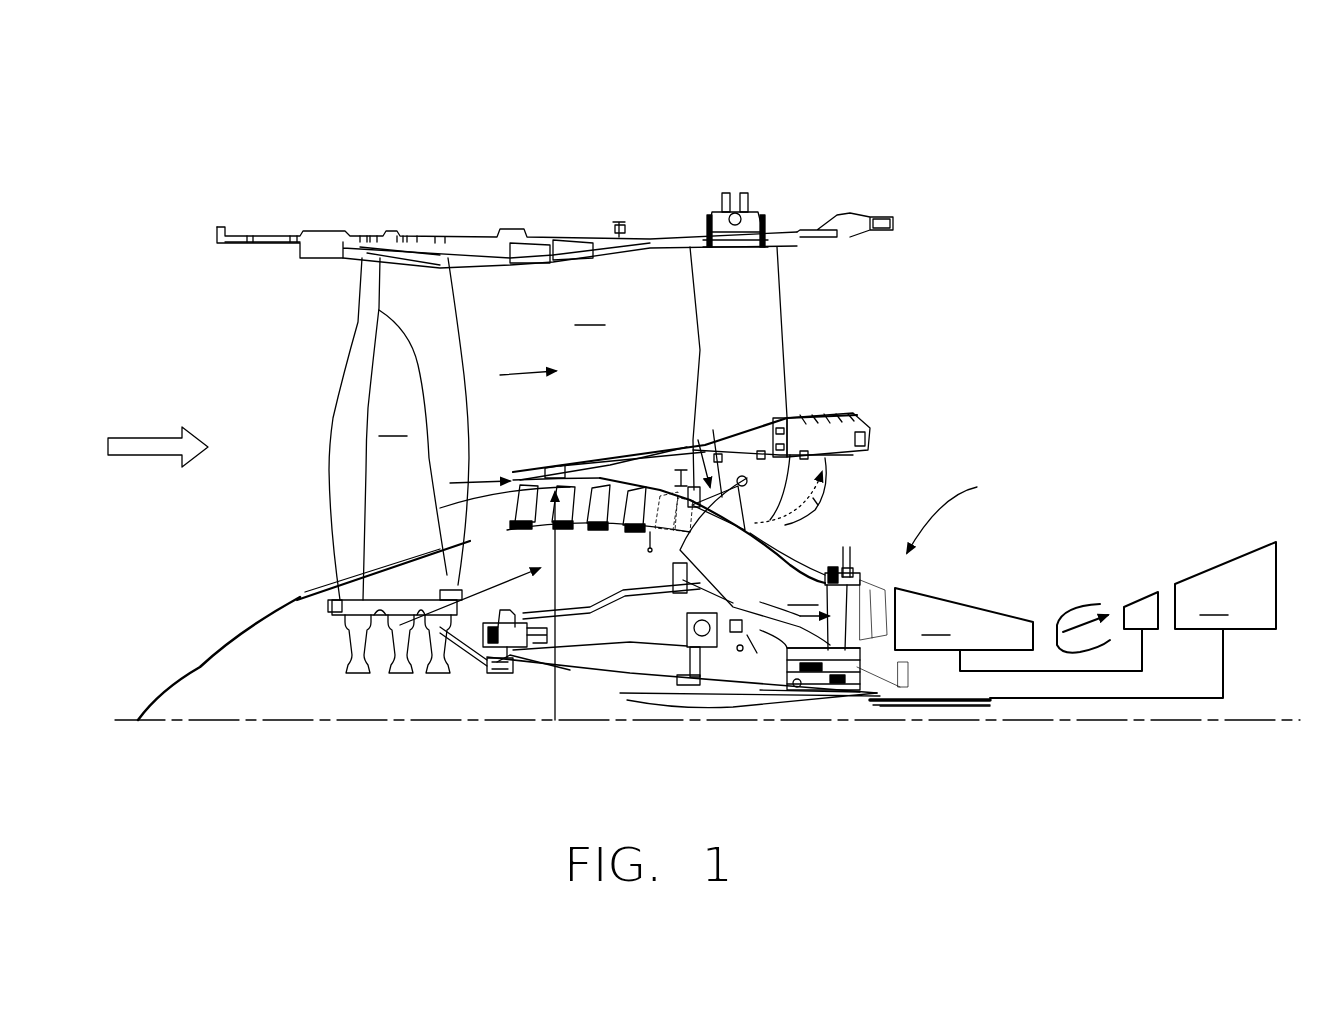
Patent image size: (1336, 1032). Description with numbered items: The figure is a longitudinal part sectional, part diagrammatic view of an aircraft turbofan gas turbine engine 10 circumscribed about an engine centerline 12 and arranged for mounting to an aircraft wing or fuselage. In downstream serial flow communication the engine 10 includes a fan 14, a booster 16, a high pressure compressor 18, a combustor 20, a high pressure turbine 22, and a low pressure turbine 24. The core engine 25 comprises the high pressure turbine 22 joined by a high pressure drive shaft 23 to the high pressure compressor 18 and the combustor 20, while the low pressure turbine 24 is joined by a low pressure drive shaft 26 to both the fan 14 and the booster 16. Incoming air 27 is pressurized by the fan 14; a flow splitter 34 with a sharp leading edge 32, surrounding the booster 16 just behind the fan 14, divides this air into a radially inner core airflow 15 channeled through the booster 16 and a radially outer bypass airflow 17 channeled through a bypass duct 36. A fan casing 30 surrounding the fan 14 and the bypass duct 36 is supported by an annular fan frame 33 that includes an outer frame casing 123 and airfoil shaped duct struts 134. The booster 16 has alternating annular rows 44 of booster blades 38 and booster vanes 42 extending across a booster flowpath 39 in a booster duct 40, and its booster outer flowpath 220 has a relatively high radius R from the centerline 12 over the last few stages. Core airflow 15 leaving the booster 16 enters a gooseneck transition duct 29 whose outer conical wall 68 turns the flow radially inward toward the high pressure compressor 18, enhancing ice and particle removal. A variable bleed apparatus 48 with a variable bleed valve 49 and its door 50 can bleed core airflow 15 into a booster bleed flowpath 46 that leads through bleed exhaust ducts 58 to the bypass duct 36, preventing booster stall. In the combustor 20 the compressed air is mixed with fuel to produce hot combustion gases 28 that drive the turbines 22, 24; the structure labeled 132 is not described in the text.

The aircraft turbofan gas turbine engine 10 is at (1098, 186).
The engine centerline 12 is at (1122, 722).
The fan 14 is at (399, 429).
The core airflow 15 is at (463, 478).
The booster 16 is at (507, 593).
The bypass airflow 17 is at (517, 370).
The high pressure compressor 18 is at (964, 619).
The combustor 20 is at (1069, 614).
The high pressure turbine 22 is at (1131, 606).
The high pressure drive shaft 23 is at (1060, 672).
The low pressure turbine 24 is at (1225, 585).
The core engine 25 is at (958, 513).
The low pressure drive shaft 26 is at (943, 707).
The air 27 is at (152, 457).
The hot combustion gases 28 is at (1080, 620).
The transition duct 29 is at (805, 627).
The fan casing 30 is at (437, 238).
The sharp leading edge 32 is at (517, 472).
The fan frame 33 is at (729, 445).
The flow splitter 34 is at (596, 455).
The bypass duct 36 is at (590, 313).
The booster blades 38 is at (592, 522).
The booster flowpath 39 is at (530, 492).
The booster duct 40 is at (543, 523).
The booster vanes 42 is at (665, 470).
The annular rows 44 is at (556, 558).
The booster bleed flowpath 46 is at (815, 500).
The variable bleed apparatus 48 is at (690, 440).
The variable bleed valve 49 is at (706, 443).
The variable bleed valve door 50 is at (668, 560).
The bleed exhaust ducts 58 is at (848, 480).
The outer conical wall 68 is at (783, 528).
The outer frame casing 123 is at (777, 246).
The rear mount assembly 132 is at (862, 420).
The duct struts 134 is at (780, 310).
The booster outer flowpath 220 is at (566, 486).
The radius R is at (553, 647).